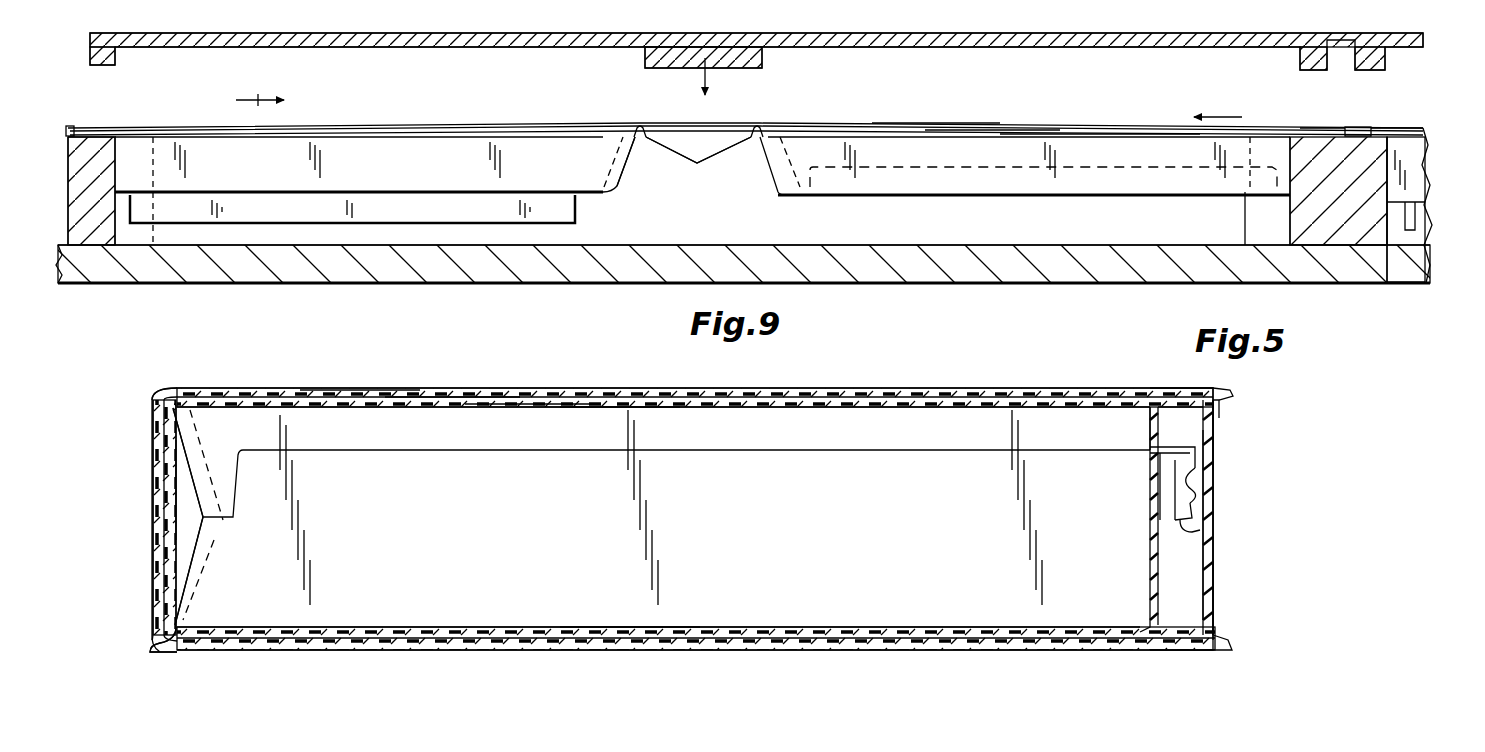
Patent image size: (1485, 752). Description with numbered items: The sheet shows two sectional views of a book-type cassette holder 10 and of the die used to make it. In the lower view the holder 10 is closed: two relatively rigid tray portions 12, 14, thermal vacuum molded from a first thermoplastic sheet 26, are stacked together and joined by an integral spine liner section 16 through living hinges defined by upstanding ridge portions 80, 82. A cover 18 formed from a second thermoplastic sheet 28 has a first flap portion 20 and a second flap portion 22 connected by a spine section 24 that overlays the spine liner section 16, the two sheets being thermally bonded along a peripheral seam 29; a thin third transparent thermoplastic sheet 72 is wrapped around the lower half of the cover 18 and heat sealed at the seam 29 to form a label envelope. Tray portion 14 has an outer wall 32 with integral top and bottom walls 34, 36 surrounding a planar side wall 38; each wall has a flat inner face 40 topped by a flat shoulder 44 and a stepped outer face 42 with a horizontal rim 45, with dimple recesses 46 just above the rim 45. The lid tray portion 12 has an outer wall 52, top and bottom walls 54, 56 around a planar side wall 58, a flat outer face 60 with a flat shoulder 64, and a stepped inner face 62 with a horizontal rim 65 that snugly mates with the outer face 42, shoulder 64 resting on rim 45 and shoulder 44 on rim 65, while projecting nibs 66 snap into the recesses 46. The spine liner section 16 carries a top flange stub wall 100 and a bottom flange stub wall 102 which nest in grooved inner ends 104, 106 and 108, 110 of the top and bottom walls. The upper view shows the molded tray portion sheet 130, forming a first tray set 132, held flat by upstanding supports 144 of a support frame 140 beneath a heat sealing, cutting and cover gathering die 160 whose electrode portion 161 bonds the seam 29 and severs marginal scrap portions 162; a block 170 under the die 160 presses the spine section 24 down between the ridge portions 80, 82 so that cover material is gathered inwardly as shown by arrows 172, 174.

In FIG. 5, the holder 10 is at (1068, 381).
In FIG. 9, the tray portion 12 is at (868, 197).
In FIG. 5, the tray portion 12 is at (1226, 407).
In FIG. 9, the tray portion 14 is at (586, 202).
In FIG. 5, the tray portion 14 is at (1215, 564).
In FIG. 9, the spine liner section 16 is at (717, 140).
In FIG. 5, the spine liner section 16 is at (180, 540).
In FIG. 9, the cover 18 is at (1318, 108).
In FIG. 5, the first flap portion 20 is at (822, 386).
In FIG. 5, the second flap portion 22 is at (748, 652).
In FIG. 9, the spine section 24 is at (732, 124).
In FIG. 5, the spine section 24 is at (152, 574).
In FIG. 9, the first thermoplastic sheet 26 is at (872, 121).
In FIG. 5, the first thermoplastic sheet 26 is at (302, 389).
In FIG. 9, the second thermoplastic sheet 28 is at (927, 128).
In FIG. 5, the second thermoplastic sheet 28 is at (388, 394).
In FIG. 5, the peripheral seam 29 is at (1228, 392).
In FIG. 5, the outer wall 32 is at (1215, 588).
In FIG. 5, the top wall 34 is at (697, 501).
In FIG. 9, the bottom wall 36 is at (392, 221).
In FIG. 5, the planar side wall 38 is at (626, 626).
In FIG. 5, the flat inner face 40 is at (1146, 568).
In FIG. 5, the stepped outer face 42 is at (1210, 608).
In FIG. 5, the flat shoulder 44 is at (1168, 472).
In FIG. 5, the horizontal rim 45 is at (1197, 537).
In FIG. 5, the dimple recess 46 is at (1166, 508).
In FIG. 5, the outer wall 52 is at (1218, 438).
In FIG. 5, the top wall 54 is at (702, 435).
In FIG. 9, the bottom wall 56 is at (1025, 185).
In FIG. 5, the planar side wall 58 is at (598, 408).
In FIG. 5, the flat outer face 60 is at (1222, 414).
In FIG. 5, the stepped inner face 62 is at (1148, 430).
In FIG. 5, the flat shoulder 64 is at (1192, 510).
In FIG. 5, the horizontal rim 65 is at (1166, 456).
In FIG. 5, the projecting nib 66 is at (1190, 486).
In FIG. 5, the third transparent thermoplastic sheet 72 is at (468, 388).
In FIG. 9, the ridge portion 80 is at (757, 140).
In FIG. 5, the ridge portion 80 is at (180, 390).
In FIG. 9, the ridge portion 82 is at (640, 142).
In FIG. 5, the ridge portion 82 is at (150, 633).
In FIG. 5, the top flange stub wall 100 is at (190, 489).
In FIG. 9, the bottom flange stub wall 102 is at (684, 153).
In FIG. 5, the inner end 104 is at (190, 590).
In FIG. 5, the inner end 106 is at (192, 464).
In FIG. 9, the inner end 108 is at (776, 192).
In FIG. 9, the inner end 110 is at (618, 189).
In FIG. 9, the molded tray portion sheet 130 is at (1002, 130).
In FIG. 9, the first tray set 132 is at (1392, 137).
In FIG. 9, the support frame 140 is at (1400, 240).
In FIG. 9, the upstanding support 144 is at (105, 240).
In FIG. 9, the heat sealing, cutting and cover gathering die 160 is at (1062, 50).
In FIG. 9, the heat sealing and cutting portion 161 is at (118, 57).
In FIG. 9, the marginal scrap portion 162 is at (98, 127).
In FIG. 9, the block 170 is at (764, 60).
In FIG. 9, the arrow 172 is at (263, 86).
In FIG. 9, the arrow 174 is at (1238, 108).